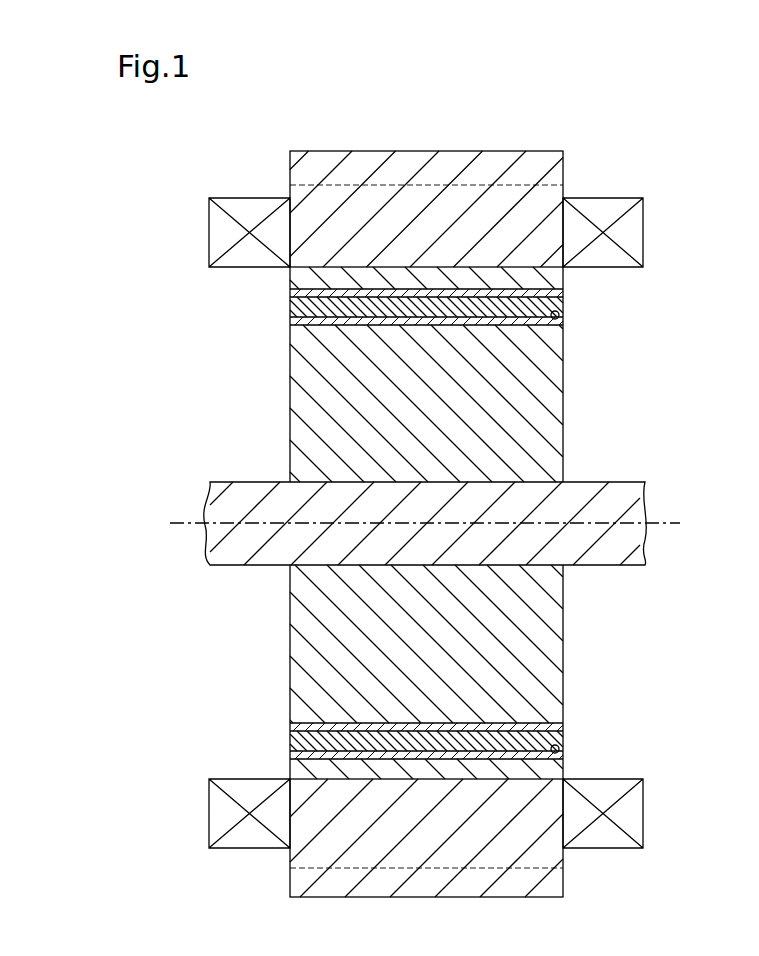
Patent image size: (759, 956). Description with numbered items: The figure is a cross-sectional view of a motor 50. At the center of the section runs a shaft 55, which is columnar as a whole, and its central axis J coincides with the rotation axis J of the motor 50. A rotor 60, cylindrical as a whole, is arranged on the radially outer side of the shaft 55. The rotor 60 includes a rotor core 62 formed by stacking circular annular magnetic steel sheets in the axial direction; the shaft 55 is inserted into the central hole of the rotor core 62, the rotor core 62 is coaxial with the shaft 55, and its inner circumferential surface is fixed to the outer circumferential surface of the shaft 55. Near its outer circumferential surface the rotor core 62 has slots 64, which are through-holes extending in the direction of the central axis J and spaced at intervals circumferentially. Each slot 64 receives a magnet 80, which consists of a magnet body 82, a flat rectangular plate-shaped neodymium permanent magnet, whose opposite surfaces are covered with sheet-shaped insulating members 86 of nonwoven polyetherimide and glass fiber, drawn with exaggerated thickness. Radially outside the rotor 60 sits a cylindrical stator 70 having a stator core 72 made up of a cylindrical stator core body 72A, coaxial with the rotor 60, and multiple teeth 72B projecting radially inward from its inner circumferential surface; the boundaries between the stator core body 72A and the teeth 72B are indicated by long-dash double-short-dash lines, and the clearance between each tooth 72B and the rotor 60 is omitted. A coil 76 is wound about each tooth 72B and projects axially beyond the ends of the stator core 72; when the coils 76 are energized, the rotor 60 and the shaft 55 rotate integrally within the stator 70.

The motor 50 is at (673, 143).
The shaft 55 is at (600, 482).
The central axis J is at (430, 524).
The rotor 60 is at (583, 377).
The rotor core 62 is at (563, 411).
The slot 64 is at (563, 317).
The stator 70 is at (448, 142).
The stator core 72 is at (643, 90).
The stator core body 72A is at (540, 150).
The tooth 72B is at (563, 188).
The coil 76 is at (645, 228).
The magnet 80 is at (197, 282).
The magnet body 82 is at (290, 307).
The insulating member 86 is at (290, 291).